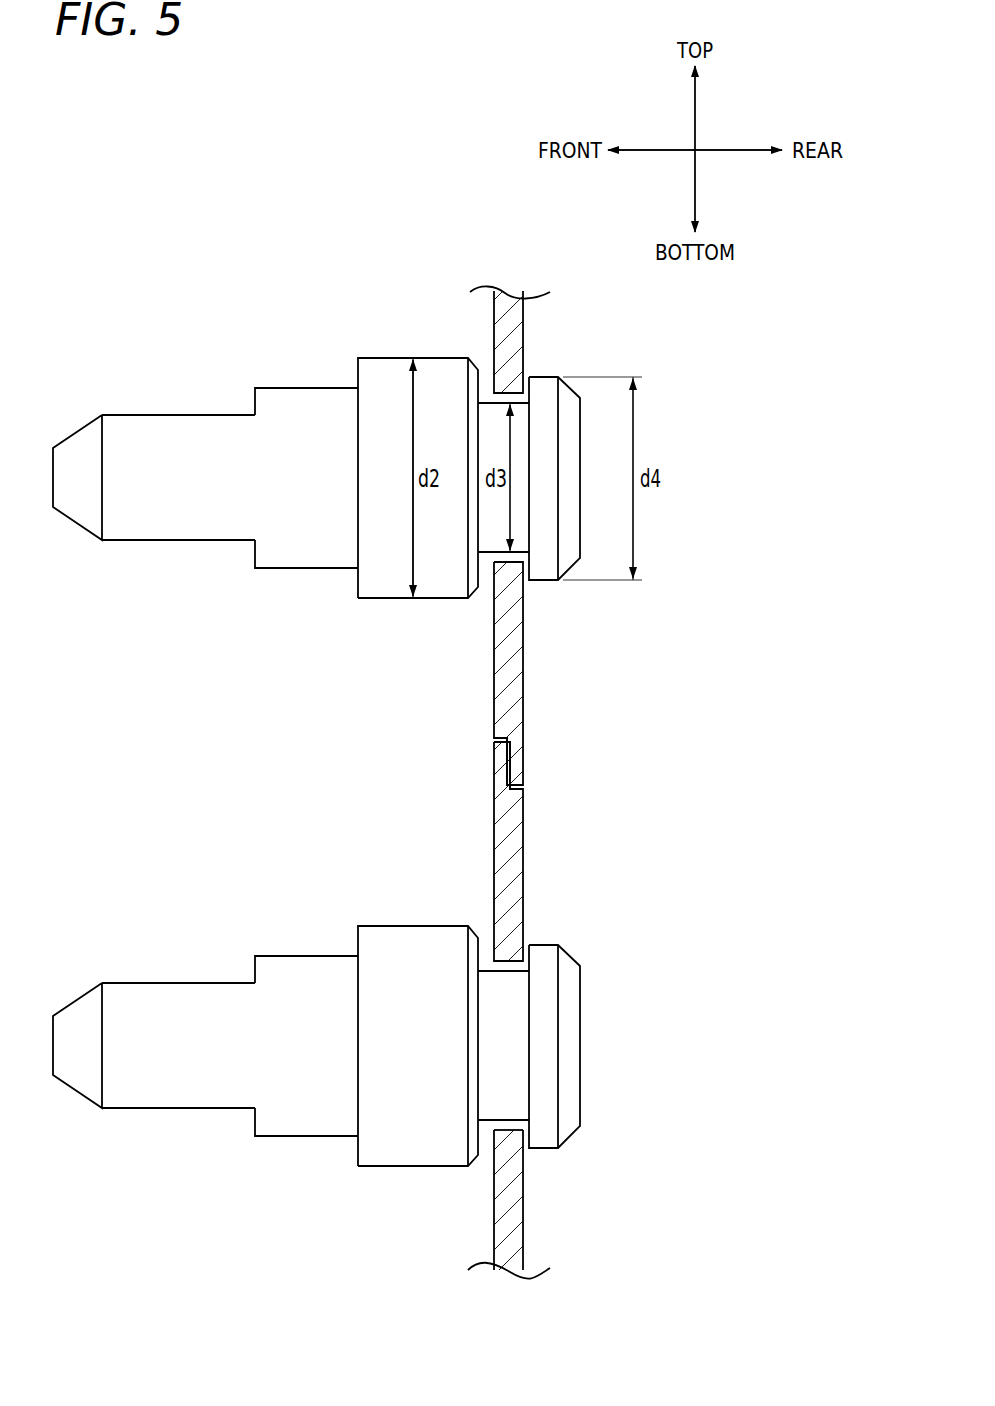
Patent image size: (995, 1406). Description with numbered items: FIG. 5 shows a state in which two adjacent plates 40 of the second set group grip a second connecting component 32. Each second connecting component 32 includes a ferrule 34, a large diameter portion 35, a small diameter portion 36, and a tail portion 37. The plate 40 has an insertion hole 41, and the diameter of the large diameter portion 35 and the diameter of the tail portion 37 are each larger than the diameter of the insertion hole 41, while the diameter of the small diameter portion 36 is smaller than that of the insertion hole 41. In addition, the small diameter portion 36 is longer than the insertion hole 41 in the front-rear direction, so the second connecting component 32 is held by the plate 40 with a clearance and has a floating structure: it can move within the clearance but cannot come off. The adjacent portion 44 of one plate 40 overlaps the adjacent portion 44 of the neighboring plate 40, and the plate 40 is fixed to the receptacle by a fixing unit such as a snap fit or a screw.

The second connecting component 32 is at (291, 731).
The ferrule 34 is at (73, 433).
The large diameter portion 35 is at (392, 357).
The small diameter portion 36 is at (492, 425).
The tail portion 37 is at (553, 408).
The plate 40 is at (513, 332).
The insertion hole 41 is at (484, 561).
The adjacent portion 44 is at (497, 762).